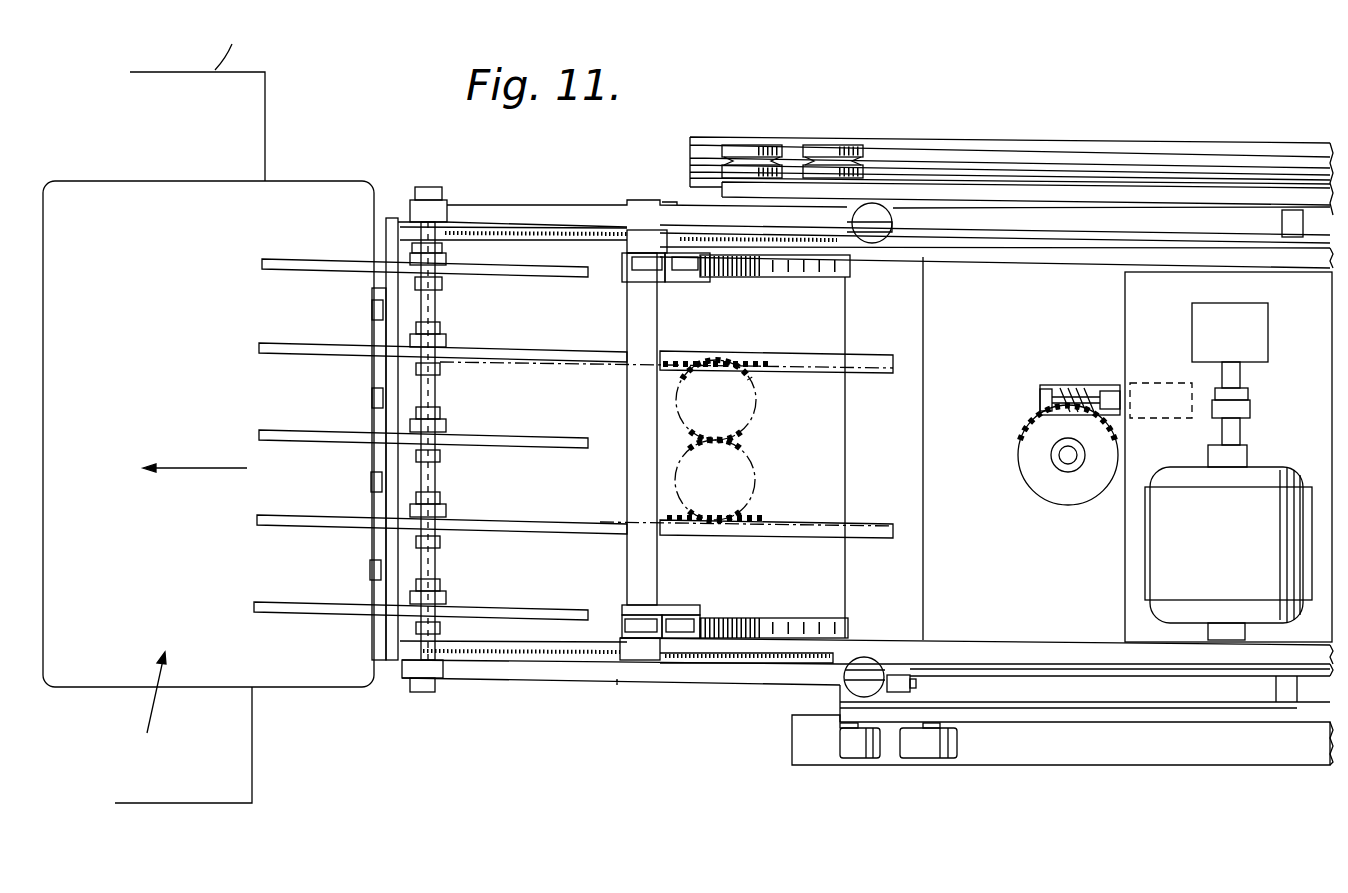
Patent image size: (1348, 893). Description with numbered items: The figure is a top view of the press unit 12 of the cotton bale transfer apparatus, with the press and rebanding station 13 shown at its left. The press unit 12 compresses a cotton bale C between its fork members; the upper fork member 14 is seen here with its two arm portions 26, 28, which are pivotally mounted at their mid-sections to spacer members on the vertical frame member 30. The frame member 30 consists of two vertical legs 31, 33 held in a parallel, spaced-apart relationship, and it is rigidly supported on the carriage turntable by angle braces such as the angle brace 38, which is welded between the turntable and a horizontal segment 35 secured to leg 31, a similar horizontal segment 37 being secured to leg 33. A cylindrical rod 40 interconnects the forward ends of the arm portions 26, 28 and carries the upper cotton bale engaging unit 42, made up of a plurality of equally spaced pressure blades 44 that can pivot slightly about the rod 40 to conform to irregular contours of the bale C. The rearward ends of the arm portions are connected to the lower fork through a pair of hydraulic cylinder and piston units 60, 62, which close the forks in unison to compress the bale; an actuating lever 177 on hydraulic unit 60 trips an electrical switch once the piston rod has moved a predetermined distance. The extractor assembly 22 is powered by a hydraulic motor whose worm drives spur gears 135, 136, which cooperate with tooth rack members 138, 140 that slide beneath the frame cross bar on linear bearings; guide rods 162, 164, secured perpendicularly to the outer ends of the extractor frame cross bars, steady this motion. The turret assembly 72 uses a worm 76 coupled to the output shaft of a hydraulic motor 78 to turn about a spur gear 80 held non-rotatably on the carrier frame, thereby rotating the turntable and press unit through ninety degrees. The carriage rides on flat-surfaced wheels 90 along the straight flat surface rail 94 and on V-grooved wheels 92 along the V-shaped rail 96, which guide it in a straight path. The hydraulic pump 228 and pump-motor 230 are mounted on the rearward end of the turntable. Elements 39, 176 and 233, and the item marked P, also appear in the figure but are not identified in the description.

The press unit 12 is at (471, 699).
The press and rebanding station 13 is at (309, 703).
The upper fork member 14 is at (531, 682).
The extractor assembly 22 is at (763, 443).
The arm portion 26 is at (582, 684).
The arm portion 28 is at (557, 208).
The vertical frame member 30 is at (664, 594).
The vertical leg 31 is at (620, 622).
The vertical leg 33 is at (632, 262).
The horizontal segment 35 is at (694, 609).
The horizontal segment 37 is at (690, 280).
The angle brace 38 is at (788, 624).
The upper hatched slide bar 39 is at (780, 273).
The cylindrical rod 40 is at (437, 398).
The upper cotton bale engaging unit 42 is at (340, 360).
The pressure blades 44 is at (299, 348).
The hydraulic cylinder and piston unit 60 is at (866, 657).
The hydraulic cylinder and piston unit 62 is at (893, 216).
The turret assembly 72 is at (1013, 460).
The worm 76 is at (1077, 384).
The hydraulic motor 78 is at (1170, 383).
The spur gear 80 is at (1025, 428).
The wheels 90 is at (918, 754).
The wheels 92 is at (745, 144).
The straight flat surface rail 94 is at (1070, 760).
The V-shaped rail 96 is at (1018, 168).
The spur gear 135 is at (733, 394).
The spur gear 136 is at (738, 496).
The tooth rack member 138 is at (753, 353).
The tooth rack member 140 is at (773, 534).
The cylindrical guide rod 162 is at (524, 240).
The guide rod 164 is at (518, 646).
The slide rod 176 is at (891, 664).
The actuating lever 177 is at (916, 684).
The pump 228 is at (1216, 303).
The pump-motor 230 is at (1177, 548).
The motor housing 233 is at (1125, 298).
The cotton bale C is at (156, 698).
The sheet pile P is at (223, 45).